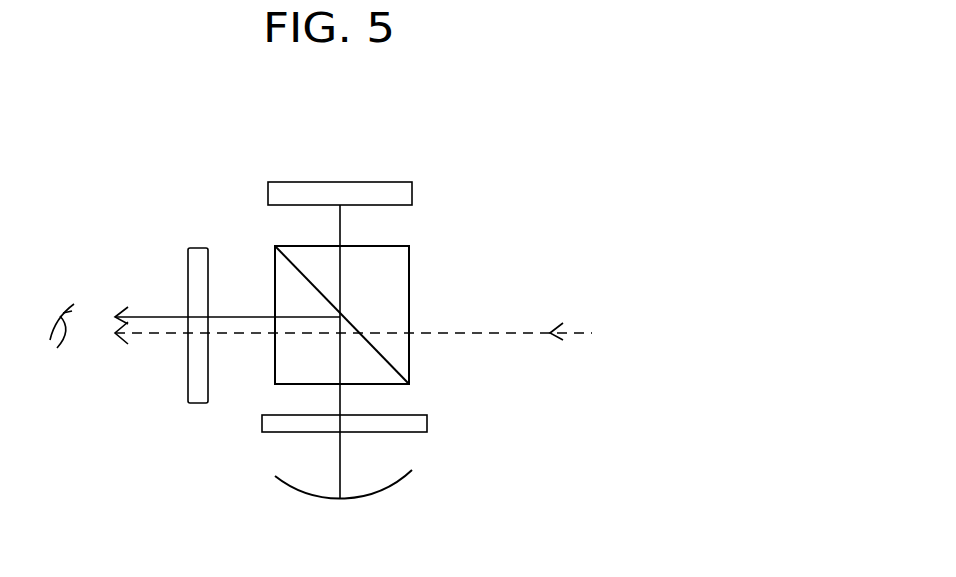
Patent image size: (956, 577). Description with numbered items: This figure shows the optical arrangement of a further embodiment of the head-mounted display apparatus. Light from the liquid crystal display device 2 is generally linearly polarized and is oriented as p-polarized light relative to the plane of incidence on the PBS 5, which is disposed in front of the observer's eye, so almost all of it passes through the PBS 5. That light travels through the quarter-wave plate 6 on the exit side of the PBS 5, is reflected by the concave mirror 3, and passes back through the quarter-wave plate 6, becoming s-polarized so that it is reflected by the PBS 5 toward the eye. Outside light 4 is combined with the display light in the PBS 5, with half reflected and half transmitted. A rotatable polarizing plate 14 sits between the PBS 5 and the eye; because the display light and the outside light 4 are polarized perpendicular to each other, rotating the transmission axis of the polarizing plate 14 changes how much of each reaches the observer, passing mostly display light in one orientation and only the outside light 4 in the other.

The rotatable polarizing plate 14 is at (196, 249).
The liquid crystal display device 2 is at (403, 182).
The polarization beam splitter (PBS) 5 is at (400, 258).
The outside light 4 is at (562, 330).
The quarter-wave plate 6 is at (427, 423).
The concave mirror 3 is at (402, 480).